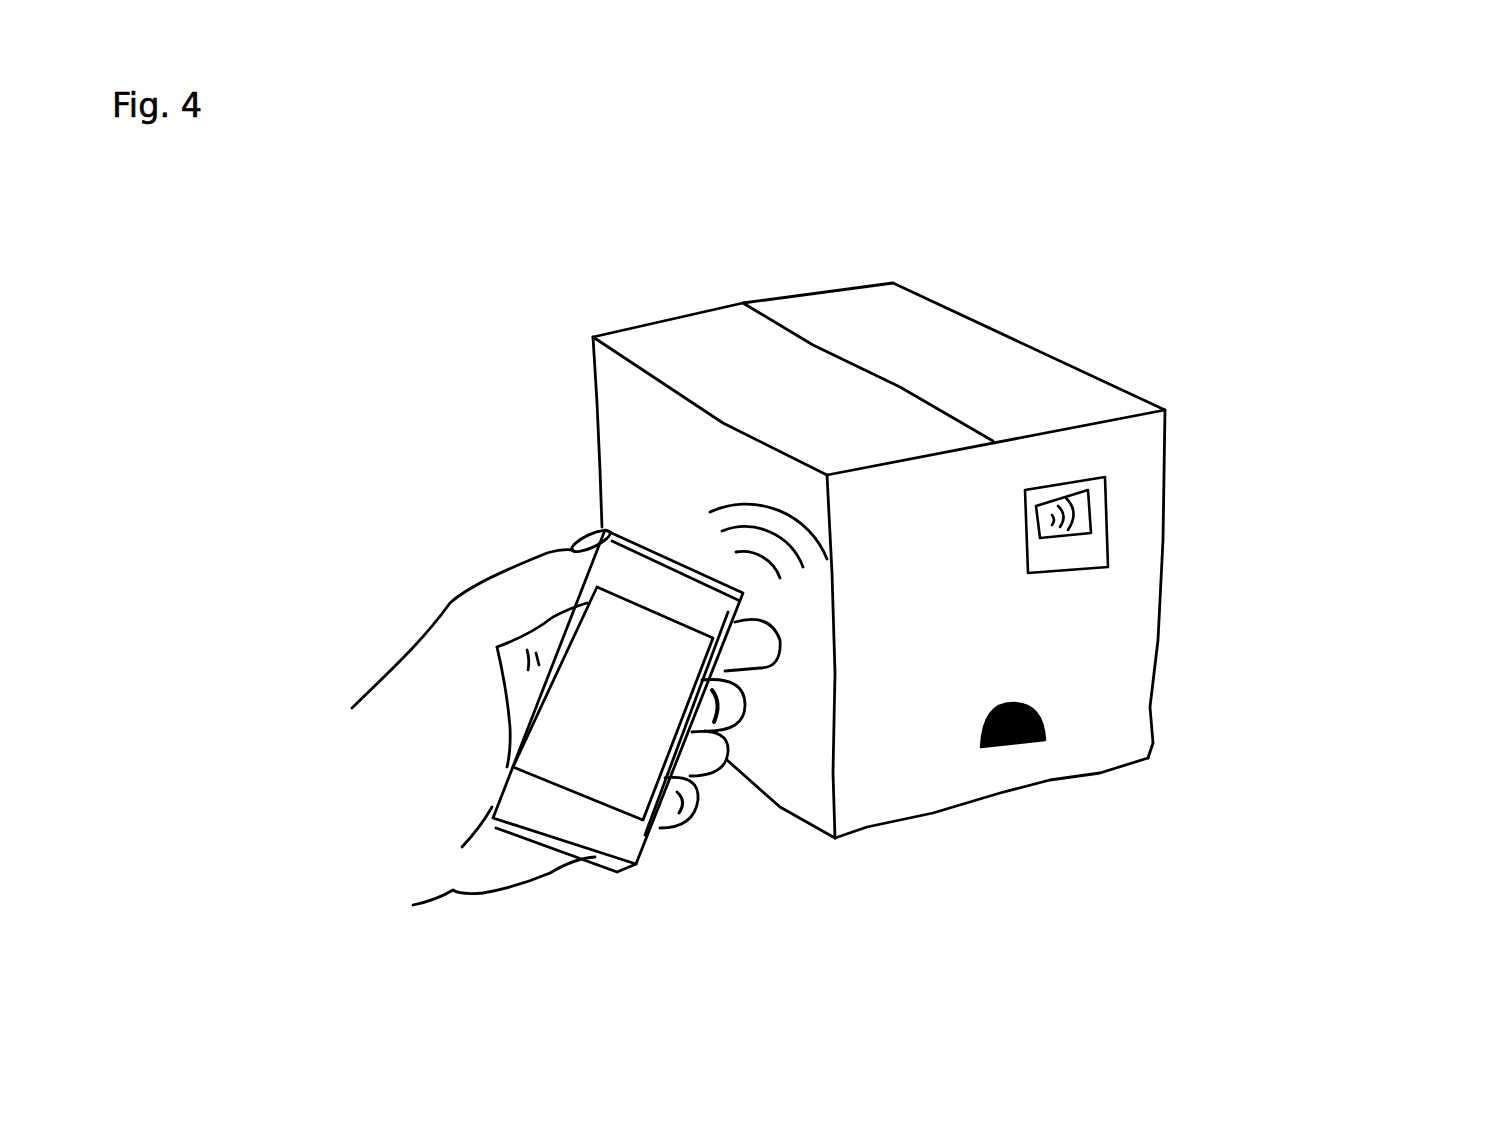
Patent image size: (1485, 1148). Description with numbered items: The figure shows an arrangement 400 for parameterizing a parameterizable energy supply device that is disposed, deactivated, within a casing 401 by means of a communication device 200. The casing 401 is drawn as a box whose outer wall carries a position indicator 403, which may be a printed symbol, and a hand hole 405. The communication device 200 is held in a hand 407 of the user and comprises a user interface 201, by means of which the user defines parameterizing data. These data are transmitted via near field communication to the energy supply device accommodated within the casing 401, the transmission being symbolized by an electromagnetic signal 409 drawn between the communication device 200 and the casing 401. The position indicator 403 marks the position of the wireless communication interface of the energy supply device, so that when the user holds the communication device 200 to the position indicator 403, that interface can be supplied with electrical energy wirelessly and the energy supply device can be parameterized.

The communication device 200 is at (613, 575).
The user interface 201 is at (580, 711).
The arrangement 400 is at (1262, 802).
The casing 401 is at (993, 358).
The position indicator 403 is at (1093, 538).
The hand hole 405 is at (1010, 730).
The hand 407 is at (423, 812).
The electromagnetic signal 409 is at (747, 500).